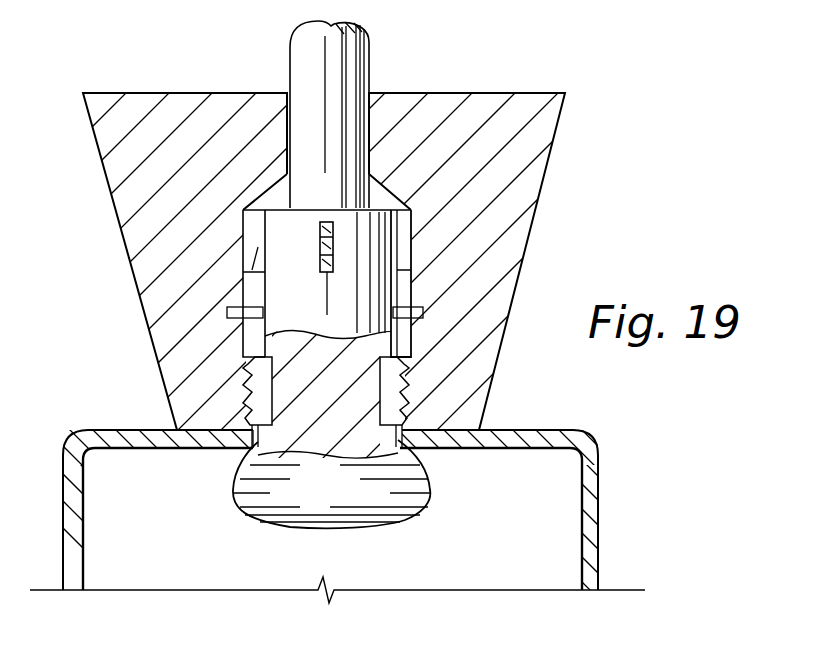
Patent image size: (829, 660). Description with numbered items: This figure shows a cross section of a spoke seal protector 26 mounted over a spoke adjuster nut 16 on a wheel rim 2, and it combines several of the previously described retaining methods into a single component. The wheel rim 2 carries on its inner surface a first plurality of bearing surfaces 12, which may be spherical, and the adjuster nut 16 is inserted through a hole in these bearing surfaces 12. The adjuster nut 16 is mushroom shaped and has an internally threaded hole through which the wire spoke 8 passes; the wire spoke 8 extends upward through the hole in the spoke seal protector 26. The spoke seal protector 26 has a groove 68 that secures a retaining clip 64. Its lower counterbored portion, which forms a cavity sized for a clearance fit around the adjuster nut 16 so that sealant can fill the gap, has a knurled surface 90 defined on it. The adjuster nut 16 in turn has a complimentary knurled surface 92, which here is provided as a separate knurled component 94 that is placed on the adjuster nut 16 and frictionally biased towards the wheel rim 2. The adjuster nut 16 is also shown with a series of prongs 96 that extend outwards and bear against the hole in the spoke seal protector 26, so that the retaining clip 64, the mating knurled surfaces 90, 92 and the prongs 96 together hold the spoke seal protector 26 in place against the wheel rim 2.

The wheel rim 2 is at (598, 548).
The wire spoke 8 is at (369, 57).
The first plurality of bearing surfaces 12 is at (190, 428).
The adjuster nut 16 is at (392, 527).
The spoke seal protector 26 is at (560, 116).
The retaining clip 64 is at (228, 312).
The groove 68 is at (415, 305).
The knurled surface 90 is at (245, 390).
The complimentary knurled surface 92 is at (405, 388).
The separate knurled component 94 is at (250, 447).
The prongs 96 is at (318, 240).